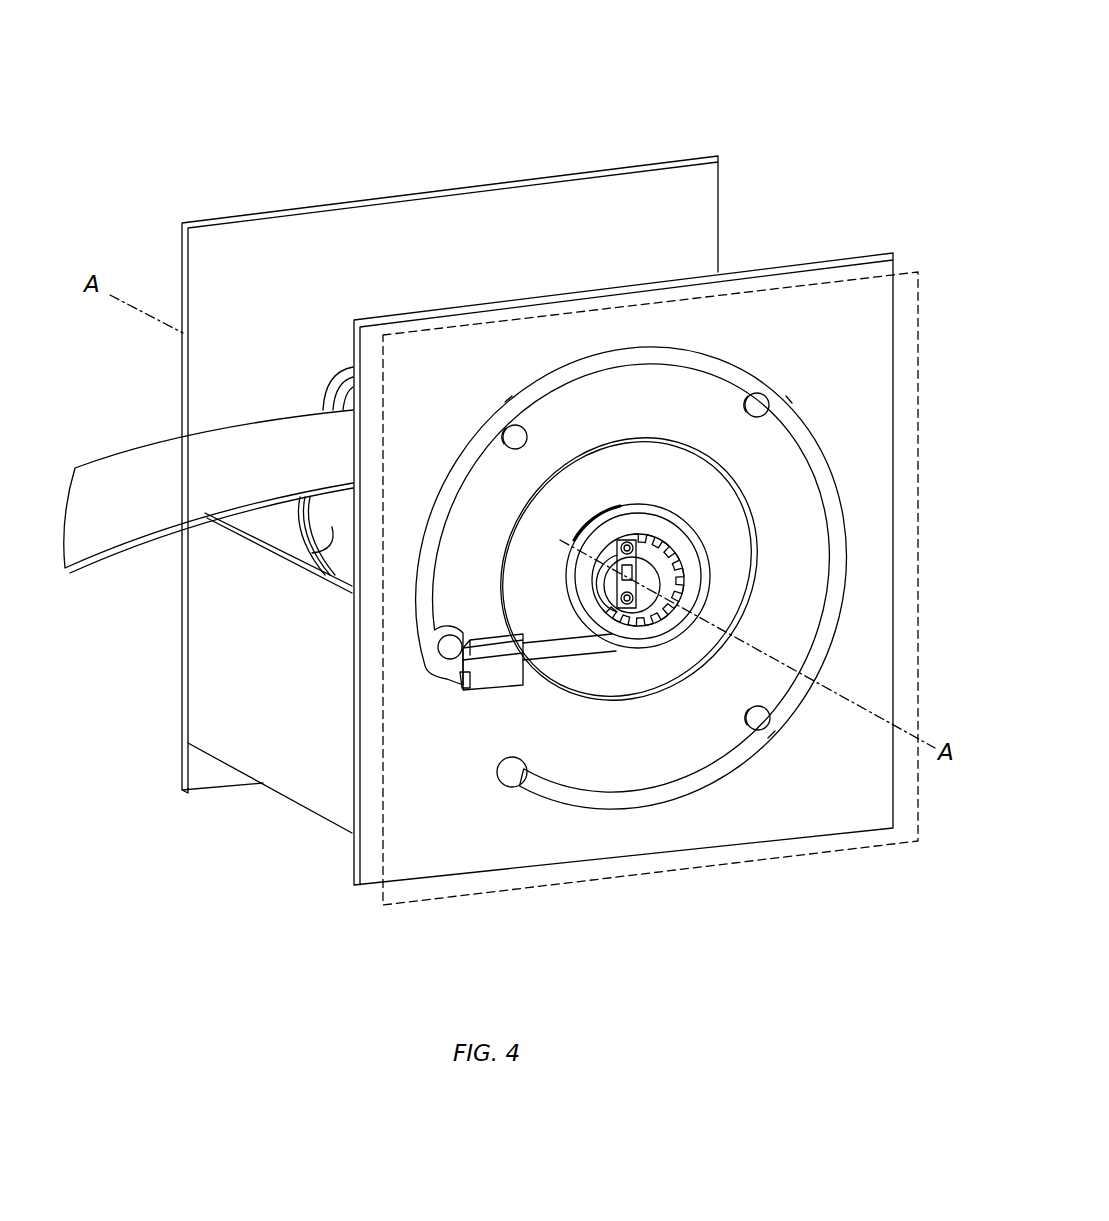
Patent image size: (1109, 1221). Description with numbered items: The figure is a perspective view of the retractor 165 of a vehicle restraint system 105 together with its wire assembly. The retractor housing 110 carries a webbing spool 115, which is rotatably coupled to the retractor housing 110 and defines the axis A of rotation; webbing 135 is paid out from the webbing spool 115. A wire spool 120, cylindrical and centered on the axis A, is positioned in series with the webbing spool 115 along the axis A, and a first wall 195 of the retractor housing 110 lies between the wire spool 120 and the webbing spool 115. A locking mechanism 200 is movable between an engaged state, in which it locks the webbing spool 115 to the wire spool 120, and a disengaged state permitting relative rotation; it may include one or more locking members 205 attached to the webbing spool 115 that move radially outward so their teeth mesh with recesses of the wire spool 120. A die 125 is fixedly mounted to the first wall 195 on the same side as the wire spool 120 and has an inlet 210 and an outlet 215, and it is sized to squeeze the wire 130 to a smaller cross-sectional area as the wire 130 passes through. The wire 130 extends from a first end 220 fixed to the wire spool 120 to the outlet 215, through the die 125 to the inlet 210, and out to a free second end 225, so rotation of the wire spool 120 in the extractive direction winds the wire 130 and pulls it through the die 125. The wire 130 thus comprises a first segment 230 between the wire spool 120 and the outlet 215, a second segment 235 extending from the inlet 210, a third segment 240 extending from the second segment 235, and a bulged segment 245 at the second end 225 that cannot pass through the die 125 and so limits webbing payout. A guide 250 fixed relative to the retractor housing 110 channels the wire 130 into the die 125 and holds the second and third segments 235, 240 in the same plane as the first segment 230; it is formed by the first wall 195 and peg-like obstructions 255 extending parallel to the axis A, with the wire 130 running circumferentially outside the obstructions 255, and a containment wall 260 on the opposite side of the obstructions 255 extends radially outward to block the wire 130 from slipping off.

The restraint system 105 is at (780, 57).
The retractor housing 110 is at (607, 167).
The webbing spool 115 is at (353, 590).
The wire spool 120 is at (722, 465).
The die 125 is at (478, 690).
The wire 130 is at (722, 355).
The webbing 135 is at (140, 445).
The retractor 165 is at (400, 185).
The first wall 195 is at (800, 263).
The locking mechanism 200 is at (660, 615).
The locking member 205 is at (665, 543).
The inlet 210 is at (476, 645).
The outlet 215 is at (527, 643).
The first end 220 is at (565, 575).
The second end 225 is at (498, 770).
The first segment 230 is at (563, 660).
The second segment 235 is at (510, 405).
The third segment 240 is at (790, 400).
The bulged segment 245 is at (507, 782).
The guide 250 is at (772, 735).
The obstructions 255 is at (537, 437).
The containment wall 260 is at (925, 318).